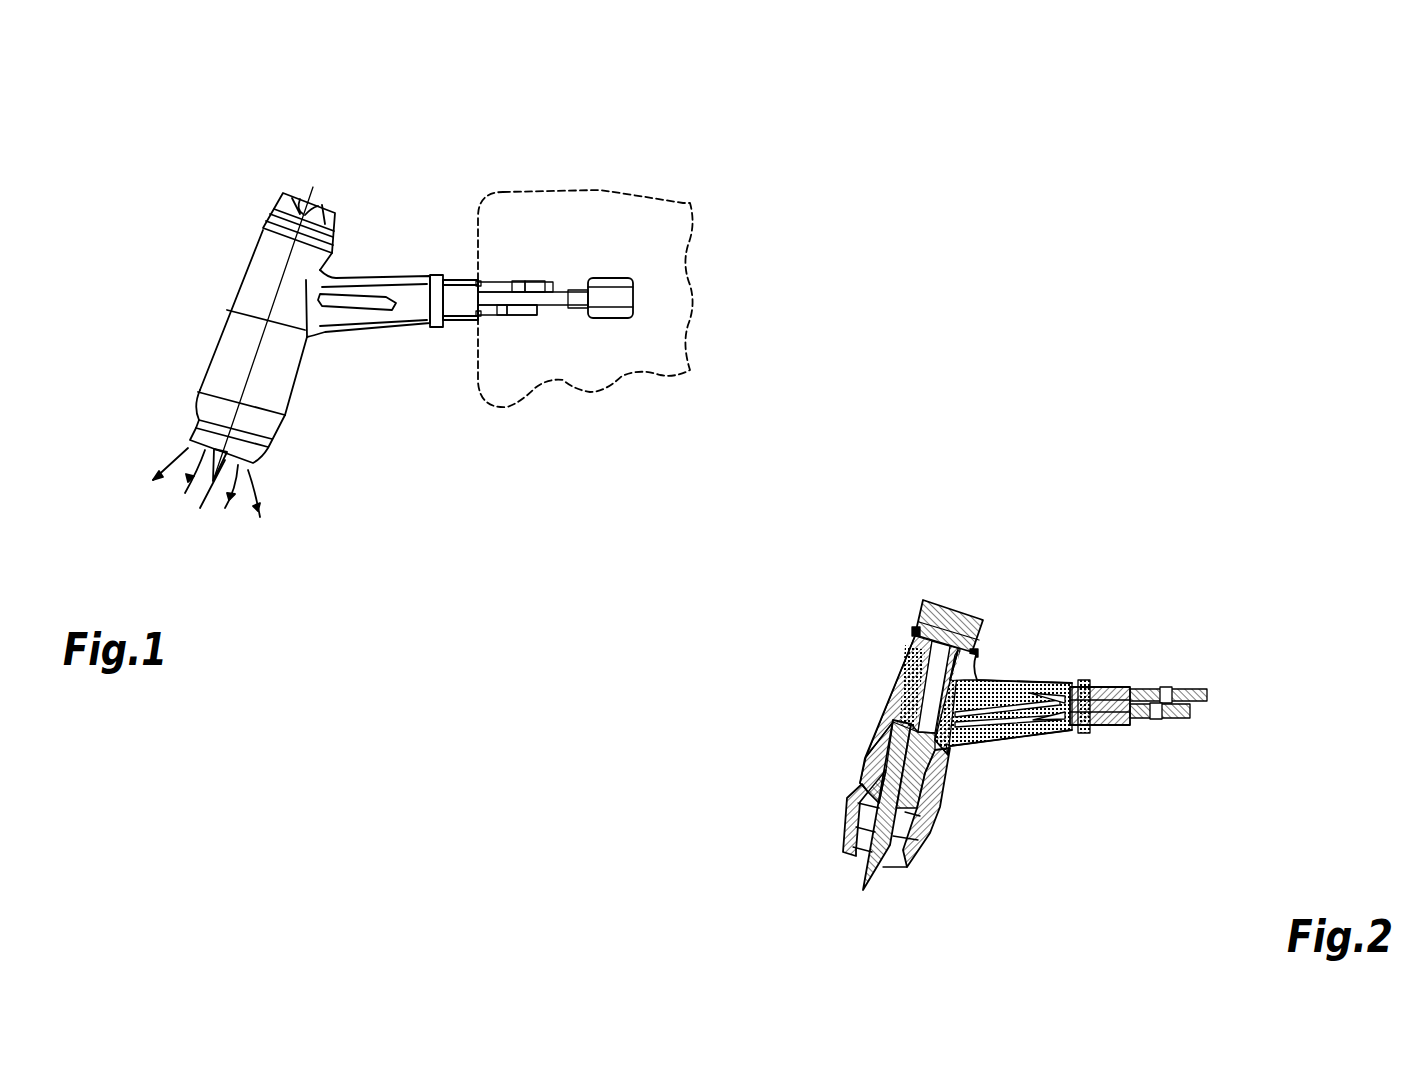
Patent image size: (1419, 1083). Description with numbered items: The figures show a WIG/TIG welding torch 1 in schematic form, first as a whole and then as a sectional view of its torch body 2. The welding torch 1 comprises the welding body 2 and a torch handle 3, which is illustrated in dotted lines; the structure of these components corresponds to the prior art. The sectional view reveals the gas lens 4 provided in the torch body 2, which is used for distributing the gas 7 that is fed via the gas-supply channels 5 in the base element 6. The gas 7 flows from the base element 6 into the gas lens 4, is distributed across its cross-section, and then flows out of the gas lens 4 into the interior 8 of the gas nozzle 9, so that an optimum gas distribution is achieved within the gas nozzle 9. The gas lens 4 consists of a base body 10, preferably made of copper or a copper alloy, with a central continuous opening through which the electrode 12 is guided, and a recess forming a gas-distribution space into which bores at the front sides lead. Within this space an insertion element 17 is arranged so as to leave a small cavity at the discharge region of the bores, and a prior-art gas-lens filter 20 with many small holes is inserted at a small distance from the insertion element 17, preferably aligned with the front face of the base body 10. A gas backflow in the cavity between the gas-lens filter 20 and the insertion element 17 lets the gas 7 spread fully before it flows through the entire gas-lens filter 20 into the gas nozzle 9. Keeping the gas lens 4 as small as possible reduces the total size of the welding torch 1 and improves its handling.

In FIG. 1, the welding torch 1 is at (760, 200).
In FIG. 1, the torch body 2 is at (230, 342).
In FIG. 2, the torch body 2 is at (1050, 608).
In FIG. 1, the torch handle 3 is at (533, 217).
In FIG. 2, the gas lens 4 is at (853, 768).
In FIG. 2, the gas-supply channels 5 is at (860, 762).
In FIG. 2, the base element 6 is at (942, 773).
In FIG. 1, the gas 7 is at (173, 465).
In FIG. 2, the interior of the gas nozzle 8 is at (892, 852).
In FIG. 2, the gas nozzle 9 is at (918, 833).
In FIG. 2, the base body 10 is at (857, 788).
In FIG. 1, the electrode 12 is at (206, 457).
In FIG. 2, the electrode 12 is at (845, 840).
In FIG. 2, the insertion element 17 is at (935, 810).
In FIG. 2, the gas-lens filter 20 is at (853, 793).